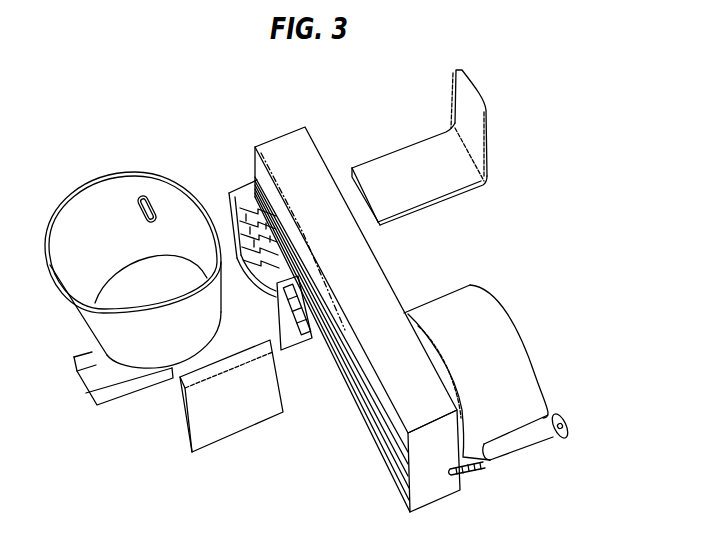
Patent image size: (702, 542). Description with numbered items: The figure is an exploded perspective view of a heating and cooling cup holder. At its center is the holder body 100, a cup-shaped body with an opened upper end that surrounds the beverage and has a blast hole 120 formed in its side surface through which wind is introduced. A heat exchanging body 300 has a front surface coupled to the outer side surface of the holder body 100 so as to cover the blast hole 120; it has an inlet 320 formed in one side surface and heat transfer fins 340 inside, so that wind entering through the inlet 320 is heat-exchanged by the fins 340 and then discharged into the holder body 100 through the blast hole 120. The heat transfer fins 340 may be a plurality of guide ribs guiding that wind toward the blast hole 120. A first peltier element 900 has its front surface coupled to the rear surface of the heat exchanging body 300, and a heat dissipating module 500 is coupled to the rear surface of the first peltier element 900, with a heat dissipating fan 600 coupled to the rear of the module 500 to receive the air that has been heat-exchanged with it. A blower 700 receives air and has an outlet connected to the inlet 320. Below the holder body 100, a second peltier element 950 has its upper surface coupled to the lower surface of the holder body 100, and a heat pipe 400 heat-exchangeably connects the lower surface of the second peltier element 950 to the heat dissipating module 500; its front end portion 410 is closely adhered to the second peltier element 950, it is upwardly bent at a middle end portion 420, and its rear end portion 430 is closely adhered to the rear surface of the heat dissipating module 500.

The holder body 100 is at (88, 207).
The blast hole 120 is at (137, 200).
The heat exchanging body 300 is at (356, 319).
The inlet 320 is at (300, 338).
The heat transfer fins 340 is at (233, 190).
The heat pipe 400 is at (469, 148).
The front end portion 410 is at (422, 152).
The middle end portion 420 is at (484, 188).
The rear end portion 430 is at (498, 142).
The heat dissipating module 500 is at (373, 290).
The heat dissipating fan 600 is at (493, 313).
The blower 700 is at (243, 417).
The first peltier element 900 is at (262, 200).
The second peltier element 950 is at (100, 388).